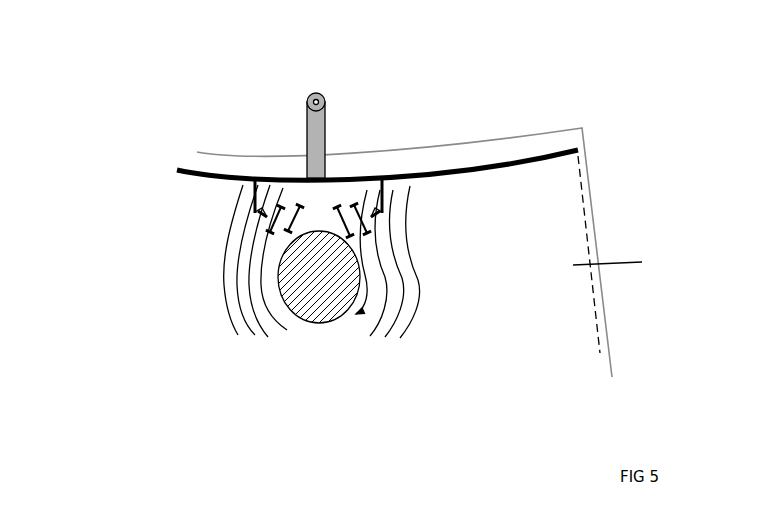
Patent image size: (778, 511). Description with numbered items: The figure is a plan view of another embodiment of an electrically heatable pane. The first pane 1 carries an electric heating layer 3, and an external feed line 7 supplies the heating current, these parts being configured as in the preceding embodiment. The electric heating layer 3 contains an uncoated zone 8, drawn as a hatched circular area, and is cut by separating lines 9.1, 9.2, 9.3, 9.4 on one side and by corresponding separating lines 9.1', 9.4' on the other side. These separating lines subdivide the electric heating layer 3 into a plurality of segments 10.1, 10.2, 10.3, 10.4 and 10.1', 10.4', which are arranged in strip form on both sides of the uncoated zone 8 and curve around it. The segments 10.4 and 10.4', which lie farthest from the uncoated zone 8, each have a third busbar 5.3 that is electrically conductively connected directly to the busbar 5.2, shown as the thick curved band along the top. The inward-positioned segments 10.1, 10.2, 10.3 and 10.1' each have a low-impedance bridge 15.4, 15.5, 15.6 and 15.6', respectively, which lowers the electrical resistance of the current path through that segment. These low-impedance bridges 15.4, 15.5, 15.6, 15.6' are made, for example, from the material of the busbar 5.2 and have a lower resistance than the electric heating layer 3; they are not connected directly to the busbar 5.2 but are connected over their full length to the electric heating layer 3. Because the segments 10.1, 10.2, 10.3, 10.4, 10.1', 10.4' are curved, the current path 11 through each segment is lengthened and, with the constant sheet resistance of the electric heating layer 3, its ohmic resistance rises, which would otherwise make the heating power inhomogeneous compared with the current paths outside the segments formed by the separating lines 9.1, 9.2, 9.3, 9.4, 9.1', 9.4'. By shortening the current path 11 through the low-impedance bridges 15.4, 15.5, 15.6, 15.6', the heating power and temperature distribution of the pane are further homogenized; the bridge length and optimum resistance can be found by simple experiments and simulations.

The first pane 1 is at (597, 232).
The electric heating layer 3 is at (633, 263).
The busbar 5.2 is at (550, 153).
The third busbar 5.3 is at (255, 207).
The external feed line 7 is at (324, 110).
The uncoated zone 8 is at (323, 300).
The current path 11 is at (358, 258).
The low-impedance bridge 15.4 is at (299, 222).
The low-impedance bridge 15.5 is at (275, 226).
The low-impedance bridge 15.6 is at (210, 160).
The low-impedance bridge 15.6' is at (404, 154).
The separating line 9.1 is at (245, 318).
The separating line 9.2 is at (266, 316).
The separating line 9.3 is at (243, 295).
The separating line 9.4 is at (163, 260).
The separating line 9.1' is at (403, 298).
The separating line 9.4' is at (479, 286).
The segment 10.1 is at (281, 380).
The segment 10.2 is at (270, 322).
The segment 10.3 is at (257, 308).
The segment 10.4 is at (138, 316).
The segment 10.1' is at (383, 376).
The segment 10.4' is at (471, 364).